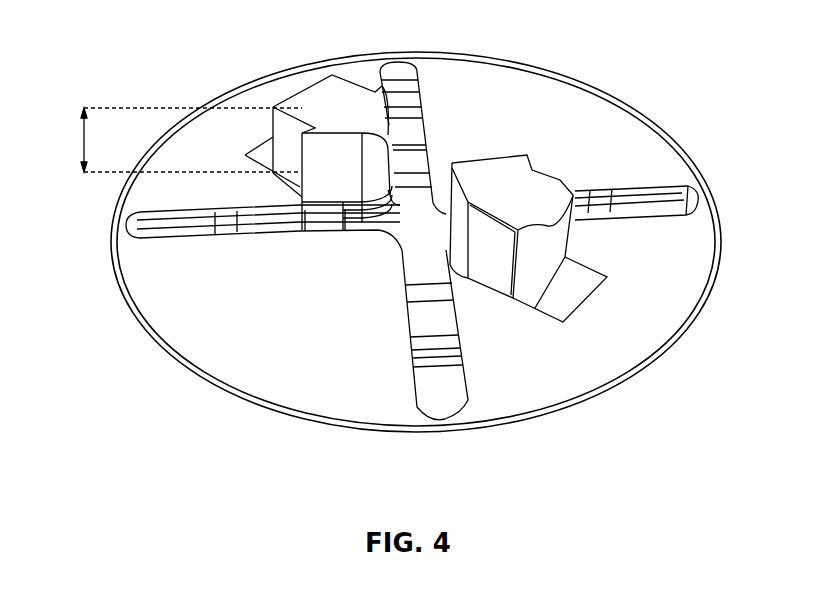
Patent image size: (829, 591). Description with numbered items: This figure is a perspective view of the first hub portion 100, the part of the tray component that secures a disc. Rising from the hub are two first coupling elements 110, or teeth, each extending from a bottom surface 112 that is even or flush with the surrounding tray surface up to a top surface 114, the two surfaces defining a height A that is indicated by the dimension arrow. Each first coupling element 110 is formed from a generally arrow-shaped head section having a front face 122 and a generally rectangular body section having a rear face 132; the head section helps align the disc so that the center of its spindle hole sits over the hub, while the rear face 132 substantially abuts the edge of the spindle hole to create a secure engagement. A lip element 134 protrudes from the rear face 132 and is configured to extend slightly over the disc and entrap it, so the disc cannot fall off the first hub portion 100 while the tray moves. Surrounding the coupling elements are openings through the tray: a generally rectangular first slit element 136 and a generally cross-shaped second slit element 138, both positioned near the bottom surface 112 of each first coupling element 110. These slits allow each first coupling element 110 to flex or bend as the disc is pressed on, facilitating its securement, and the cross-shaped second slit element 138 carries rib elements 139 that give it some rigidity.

The first hub portion 100 is at (172, 50).
The first coupling element 110 is at (327, 97).
The bottom surface 112 is at (110, 174).
The top surface 114 is at (110, 106).
The front face 122 is at (375, 145).
The rear face 132 is at (548, 248).
The lip element 134 is at (555, 210).
The first slit element 136 is at (568, 296).
The second slit element 138 is at (408, 222).
The rib element 139 is at (226, 230).
The height A is at (82, 138).